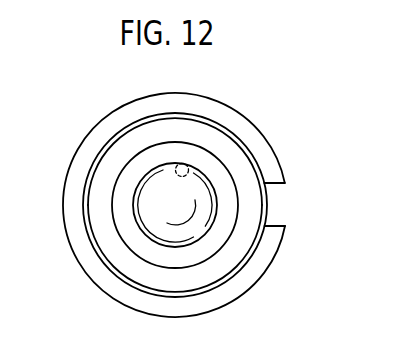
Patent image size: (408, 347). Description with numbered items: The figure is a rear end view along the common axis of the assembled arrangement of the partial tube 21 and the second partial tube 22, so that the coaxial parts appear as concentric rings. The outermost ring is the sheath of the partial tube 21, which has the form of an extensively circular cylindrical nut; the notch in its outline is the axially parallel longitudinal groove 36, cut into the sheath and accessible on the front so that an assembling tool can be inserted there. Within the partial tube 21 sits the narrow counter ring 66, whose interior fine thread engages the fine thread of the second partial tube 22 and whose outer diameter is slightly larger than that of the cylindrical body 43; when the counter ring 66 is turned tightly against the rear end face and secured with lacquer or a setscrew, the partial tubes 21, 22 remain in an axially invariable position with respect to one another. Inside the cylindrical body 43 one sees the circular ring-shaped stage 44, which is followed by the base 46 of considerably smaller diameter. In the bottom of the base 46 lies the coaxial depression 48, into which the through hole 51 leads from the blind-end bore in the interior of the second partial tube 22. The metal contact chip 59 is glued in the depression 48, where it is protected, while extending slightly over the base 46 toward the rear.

The partial tube 21 is at (162, 88).
The second partial tube 22 is at (180, 106).
The longitudinal groove 36 is at (273, 212).
The cylindrical body 43 is at (241, 138).
The circular ring-shaped stage 44 is at (102, 183).
The base 46 is at (122, 166).
The depression 48 is at (148, 170).
The through hole 51 is at (186, 164).
The metal contact chip 59 is at (147, 216).
The counter ring 66 is at (103, 263).